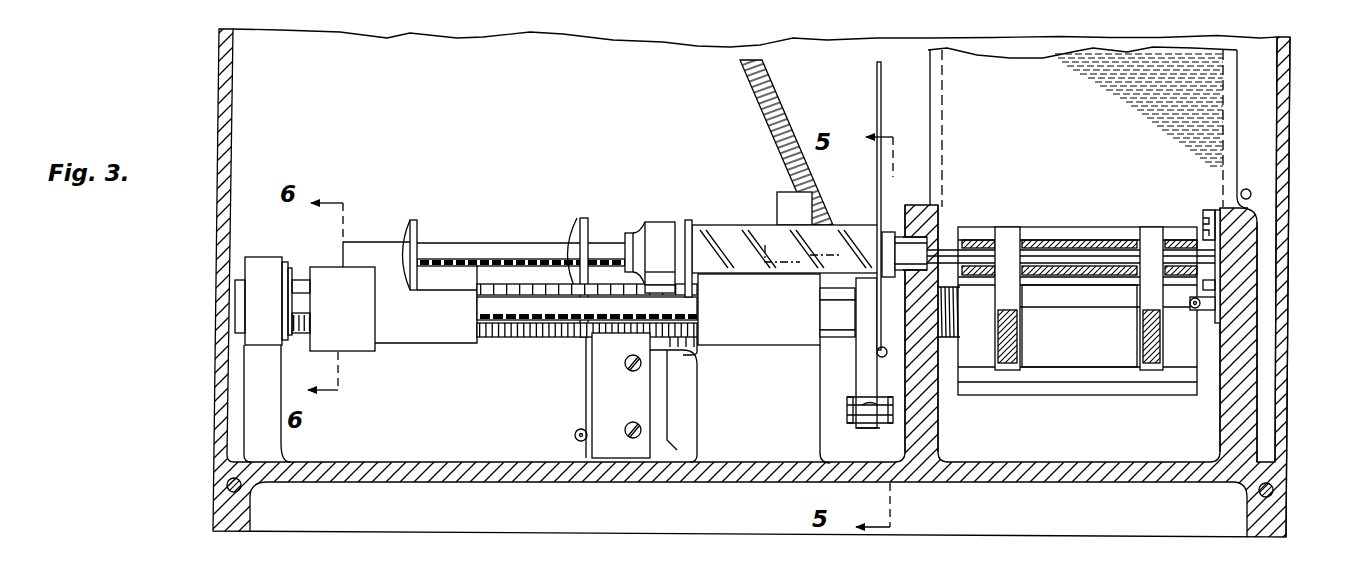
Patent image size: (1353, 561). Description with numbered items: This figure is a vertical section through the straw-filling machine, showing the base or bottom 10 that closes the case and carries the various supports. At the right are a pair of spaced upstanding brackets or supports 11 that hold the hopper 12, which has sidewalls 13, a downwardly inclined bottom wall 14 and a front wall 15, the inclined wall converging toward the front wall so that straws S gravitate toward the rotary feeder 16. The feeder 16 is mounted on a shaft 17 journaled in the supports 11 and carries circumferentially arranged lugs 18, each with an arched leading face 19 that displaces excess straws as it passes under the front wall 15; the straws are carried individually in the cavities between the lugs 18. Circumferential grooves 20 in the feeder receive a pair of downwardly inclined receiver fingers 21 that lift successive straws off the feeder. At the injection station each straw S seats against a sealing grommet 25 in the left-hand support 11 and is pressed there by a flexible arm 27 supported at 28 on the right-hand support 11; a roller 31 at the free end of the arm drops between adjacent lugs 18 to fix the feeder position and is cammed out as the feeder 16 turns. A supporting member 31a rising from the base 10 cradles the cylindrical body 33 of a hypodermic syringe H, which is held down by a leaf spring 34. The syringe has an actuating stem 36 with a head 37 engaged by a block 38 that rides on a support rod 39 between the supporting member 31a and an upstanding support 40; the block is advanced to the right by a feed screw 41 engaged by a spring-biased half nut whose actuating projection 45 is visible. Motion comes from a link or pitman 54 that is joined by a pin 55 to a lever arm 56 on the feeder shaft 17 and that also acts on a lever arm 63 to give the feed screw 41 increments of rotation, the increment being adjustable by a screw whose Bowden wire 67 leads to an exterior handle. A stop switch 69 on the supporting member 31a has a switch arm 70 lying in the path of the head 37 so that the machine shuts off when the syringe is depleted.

The base or bottom 10 is at (431, 462).
The upstanding brackets or supports 11 is at (930, 442).
The hopper 12 is at (928, 66).
The sidewalls 13 is at (945, 106).
The downwardly inclined base or bottom wall 14 is at (1218, 280).
The front wall 15 is at (1089, 123).
The rotary feeder 16 is at (1080, 397).
The shaft 17 is at (1215, 330).
The lugs 18 is at (1120, 380).
The leading face 19 is at (1057, 234).
The circumferential grooves 20 is at (1012, 372).
The receiver fingers 21 is at (1133, 333).
The sealing grommet 25 is at (952, 262).
The flexible arm 27 is at (1218, 288).
The arm support 28 is at (1218, 228).
The roller 31 is at (1196, 303).
The supporting member 31a is at (764, 368).
The cylindrical body 33 is at (742, 237).
The leaf spring 34 is at (799, 203).
The actuating stem 36 is at (527, 247).
The head 37 is at (419, 230).
The block 38 is at (371, 247).
The support rod 39 is at (550, 312).
The upstanding support 40 is at (266, 275).
The feed screw 41 is at (497, 334).
The actuating projection 45 is at (365, 341).
The link or pitman 54 is at (862, 359).
The pin 55 is at (838, 410).
The lever arm 56 is at (870, 382).
The lever arm 63 is at (820, 333).
The Bowden wire 67 is at (777, 118).
The stop switch 69 is at (638, 410).
The switch arm 70 is at (580, 370).
The hypodermic syringe H is at (713, 218).
The straws S is at (1003, 250).